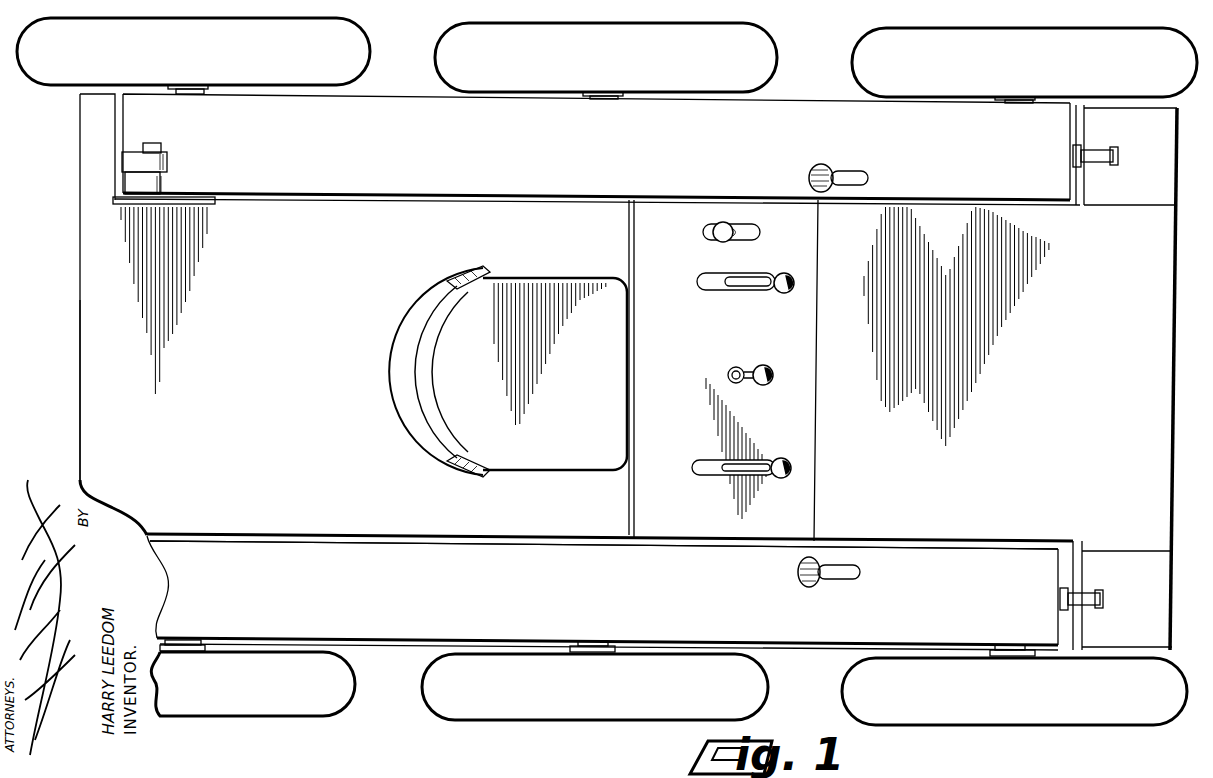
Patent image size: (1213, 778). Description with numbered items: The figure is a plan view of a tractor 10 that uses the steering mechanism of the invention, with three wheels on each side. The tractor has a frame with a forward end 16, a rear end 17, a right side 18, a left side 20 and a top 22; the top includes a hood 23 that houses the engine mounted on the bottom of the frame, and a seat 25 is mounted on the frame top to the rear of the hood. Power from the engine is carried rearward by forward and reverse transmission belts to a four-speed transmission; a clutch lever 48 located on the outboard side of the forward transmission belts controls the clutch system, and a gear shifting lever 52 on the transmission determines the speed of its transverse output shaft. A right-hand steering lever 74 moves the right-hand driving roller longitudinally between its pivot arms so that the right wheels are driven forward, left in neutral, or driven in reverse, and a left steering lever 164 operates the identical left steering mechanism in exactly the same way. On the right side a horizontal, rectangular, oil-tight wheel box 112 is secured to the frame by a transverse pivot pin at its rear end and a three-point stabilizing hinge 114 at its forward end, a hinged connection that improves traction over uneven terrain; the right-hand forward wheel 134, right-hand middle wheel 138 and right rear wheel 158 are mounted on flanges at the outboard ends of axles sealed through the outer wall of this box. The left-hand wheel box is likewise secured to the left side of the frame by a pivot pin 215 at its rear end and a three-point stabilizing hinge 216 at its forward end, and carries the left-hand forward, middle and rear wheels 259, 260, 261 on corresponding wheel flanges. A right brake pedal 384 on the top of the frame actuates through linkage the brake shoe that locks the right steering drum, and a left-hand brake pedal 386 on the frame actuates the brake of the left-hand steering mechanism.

The tractor 10 is at (62, 378).
The forward end 16 is at (1172, 318).
The rear end 17 is at (79, 247).
The right side 18 is at (798, 648).
The left side 20 is at (396, 96).
The top 22 is at (334, 458).
The hood 23 is at (1015, 458).
The seat 25 is at (586, 404).
The clutch lever 48 is at (742, 240).
The gear shifting lever 52 is at (758, 366).
The right-hand steering lever 74 is at (760, 462).
The wheel box 112 is at (262, 598).
The three-point stabilizing hinge 114 is at (1101, 604).
The right-hand forward wheel 134 is at (936, 703).
The right-hand middle wheel 138 is at (560, 700).
The right rear wheel 158 is at (297, 697).
The left steering lever 164 is at (773, 293).
The pivot pin 215 is at (152, 143).
The three-point stabilizing hinge 216 is at (1114, 151).
The left-hand forward wheel 259 is at (946, 72).
The left-hand middle wheel 260 is at (681, 67).
The left-hand rear wheel 261 is at (288, 58).
The right brake pedal 384 is at (800, 573).
The left-hand brake pedal 386 is at (835, 166).